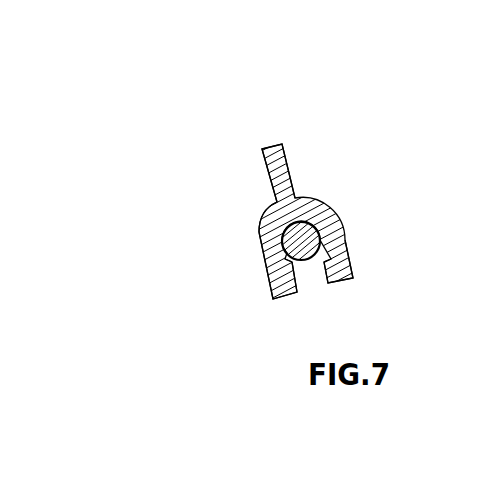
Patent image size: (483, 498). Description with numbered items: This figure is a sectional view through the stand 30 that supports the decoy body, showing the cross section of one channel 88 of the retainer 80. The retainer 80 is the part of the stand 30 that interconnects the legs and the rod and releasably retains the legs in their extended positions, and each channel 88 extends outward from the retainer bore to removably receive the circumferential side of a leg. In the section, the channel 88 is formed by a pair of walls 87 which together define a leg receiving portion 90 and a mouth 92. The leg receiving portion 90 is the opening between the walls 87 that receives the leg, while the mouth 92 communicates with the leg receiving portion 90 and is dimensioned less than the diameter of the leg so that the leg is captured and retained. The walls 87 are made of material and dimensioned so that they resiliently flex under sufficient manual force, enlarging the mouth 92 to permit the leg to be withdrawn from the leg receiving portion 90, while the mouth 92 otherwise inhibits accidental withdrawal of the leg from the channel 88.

The stand 30 is at (280, 234).
The retainer 80 is at (337, 131).
The walls 87 is at (301, 292).
The channel 88 is at (323, 221).
The leg receiving portion 90 is at (193, 233).
The mouth 92 is at (360, 296).